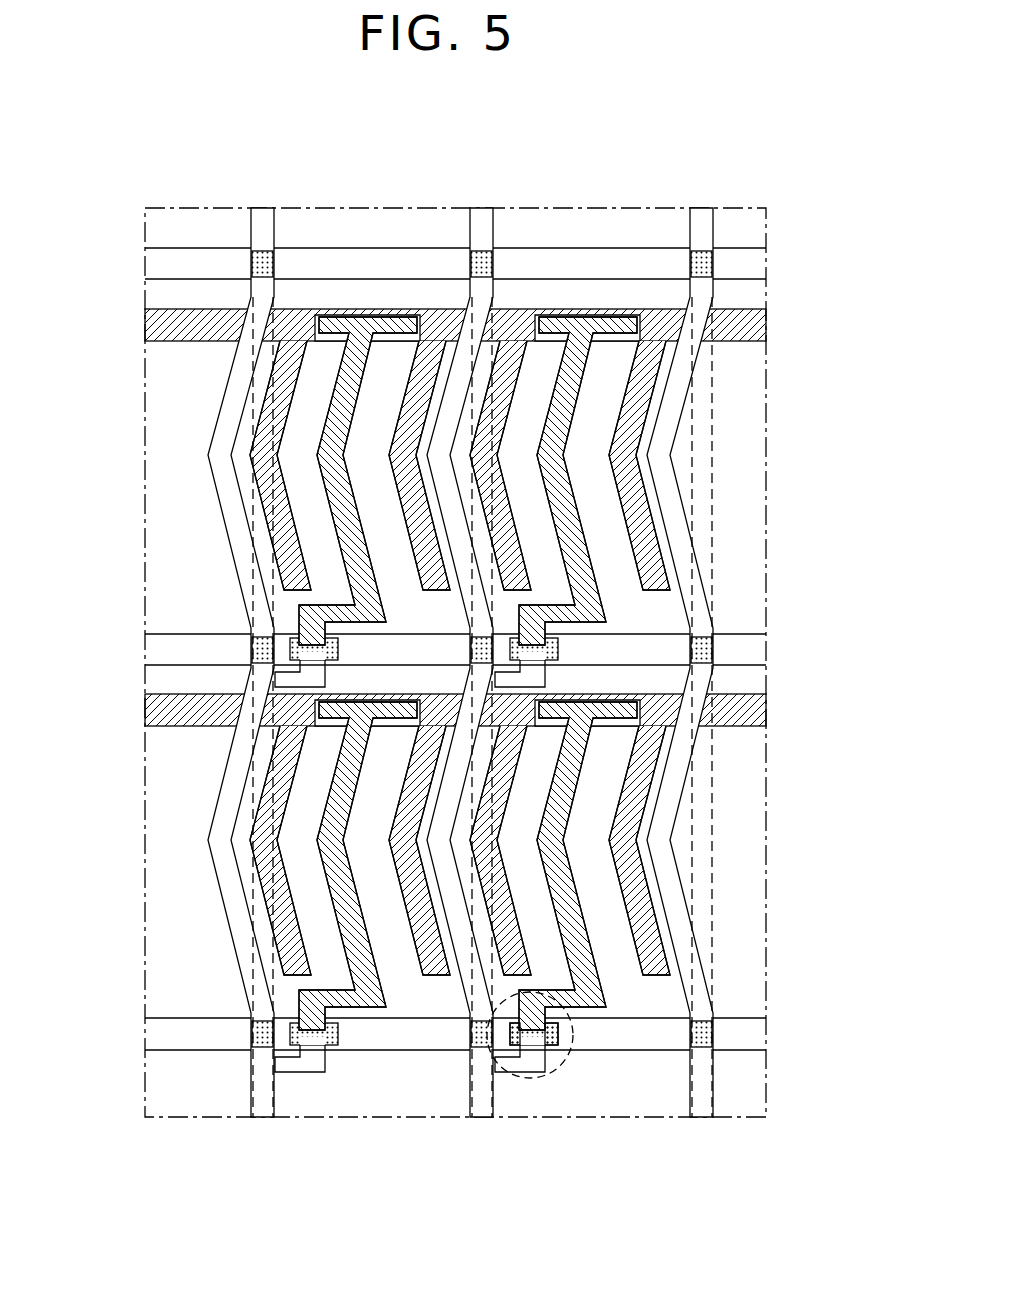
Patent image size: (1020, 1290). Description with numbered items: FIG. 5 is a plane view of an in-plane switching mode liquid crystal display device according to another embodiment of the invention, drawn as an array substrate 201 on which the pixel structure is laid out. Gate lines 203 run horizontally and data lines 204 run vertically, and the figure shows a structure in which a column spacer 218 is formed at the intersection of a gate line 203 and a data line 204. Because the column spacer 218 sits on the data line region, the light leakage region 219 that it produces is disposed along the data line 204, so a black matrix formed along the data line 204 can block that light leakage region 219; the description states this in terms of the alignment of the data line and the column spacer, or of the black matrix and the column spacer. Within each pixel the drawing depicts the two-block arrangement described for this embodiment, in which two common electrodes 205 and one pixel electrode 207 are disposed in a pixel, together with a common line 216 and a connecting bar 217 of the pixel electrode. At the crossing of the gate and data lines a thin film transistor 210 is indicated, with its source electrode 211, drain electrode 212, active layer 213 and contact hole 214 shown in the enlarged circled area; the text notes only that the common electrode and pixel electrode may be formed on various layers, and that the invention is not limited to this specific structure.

The array substrate 201 is at (775, 217).
The gate line 203 is at (752, 649).
The data line 204 is at (483, 226).
The common electrode 205 is at (262, 847).
The pixel electrode 207 is at (350, 915).
The thin film transistor 210 is at (529, 1092).
The source electrode 211 is at (563, 1057).
The drain electrode 212 is at (559, 1027).
The active layer 213 is at (522, 1063).
The contact hole 214 is at (520, 1005).
The common line 216 is at (160, 713).
The pixel electrode connection bar 217 is at (760, 717).
The column spacer 218 is at (260, 1036).
The light leakage region 219 is at (470, 547).